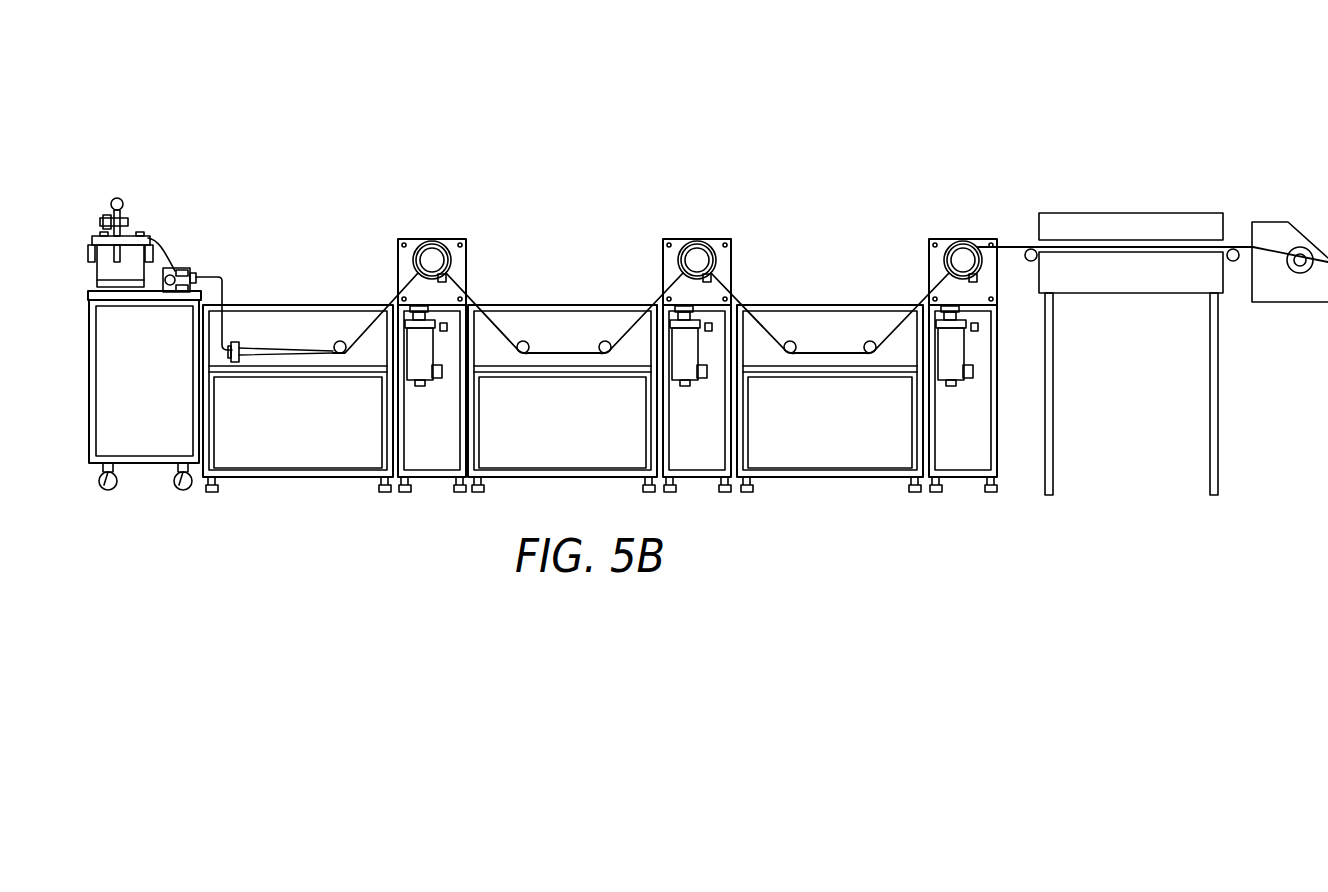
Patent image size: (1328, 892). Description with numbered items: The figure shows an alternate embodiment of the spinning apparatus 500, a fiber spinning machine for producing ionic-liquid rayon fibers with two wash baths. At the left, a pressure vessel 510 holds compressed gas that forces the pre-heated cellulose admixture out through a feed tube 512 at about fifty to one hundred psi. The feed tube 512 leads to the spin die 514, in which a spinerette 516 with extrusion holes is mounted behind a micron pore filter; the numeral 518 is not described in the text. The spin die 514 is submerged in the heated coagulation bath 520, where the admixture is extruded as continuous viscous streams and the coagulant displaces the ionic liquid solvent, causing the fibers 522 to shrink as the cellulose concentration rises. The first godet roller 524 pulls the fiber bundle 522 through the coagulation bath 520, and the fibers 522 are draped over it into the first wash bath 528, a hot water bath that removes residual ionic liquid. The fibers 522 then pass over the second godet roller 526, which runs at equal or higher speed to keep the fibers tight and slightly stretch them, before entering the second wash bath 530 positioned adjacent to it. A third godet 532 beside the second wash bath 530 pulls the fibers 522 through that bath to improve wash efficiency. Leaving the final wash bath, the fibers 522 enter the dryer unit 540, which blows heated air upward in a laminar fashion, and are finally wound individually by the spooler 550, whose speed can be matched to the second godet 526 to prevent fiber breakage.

The spinning apparatus 500 is at (300, 101).
The pressure vessel 510 is at (123, 237).
The feed tube 512 is at (203, 275).
The spin die 514 is at (237, 341).
The spinerette 516 is at (241, 362).
The fiber strand 518 is at (234, 362).
The coagulation bath 520 is at (318, 346).
The fibers 522 is at (395, 291).
The first godet roller 524 is at (432, 253).
The second godet roller 526 is at (697, 253).
The first wash bath 528 is at (581, 348).
The second wash bath 530 is at (853, 348).
The third godet 532 is at (963, 253).
The dryer unit 540 is at (1147, 213).
The spooler 550 is at (1262, 222).